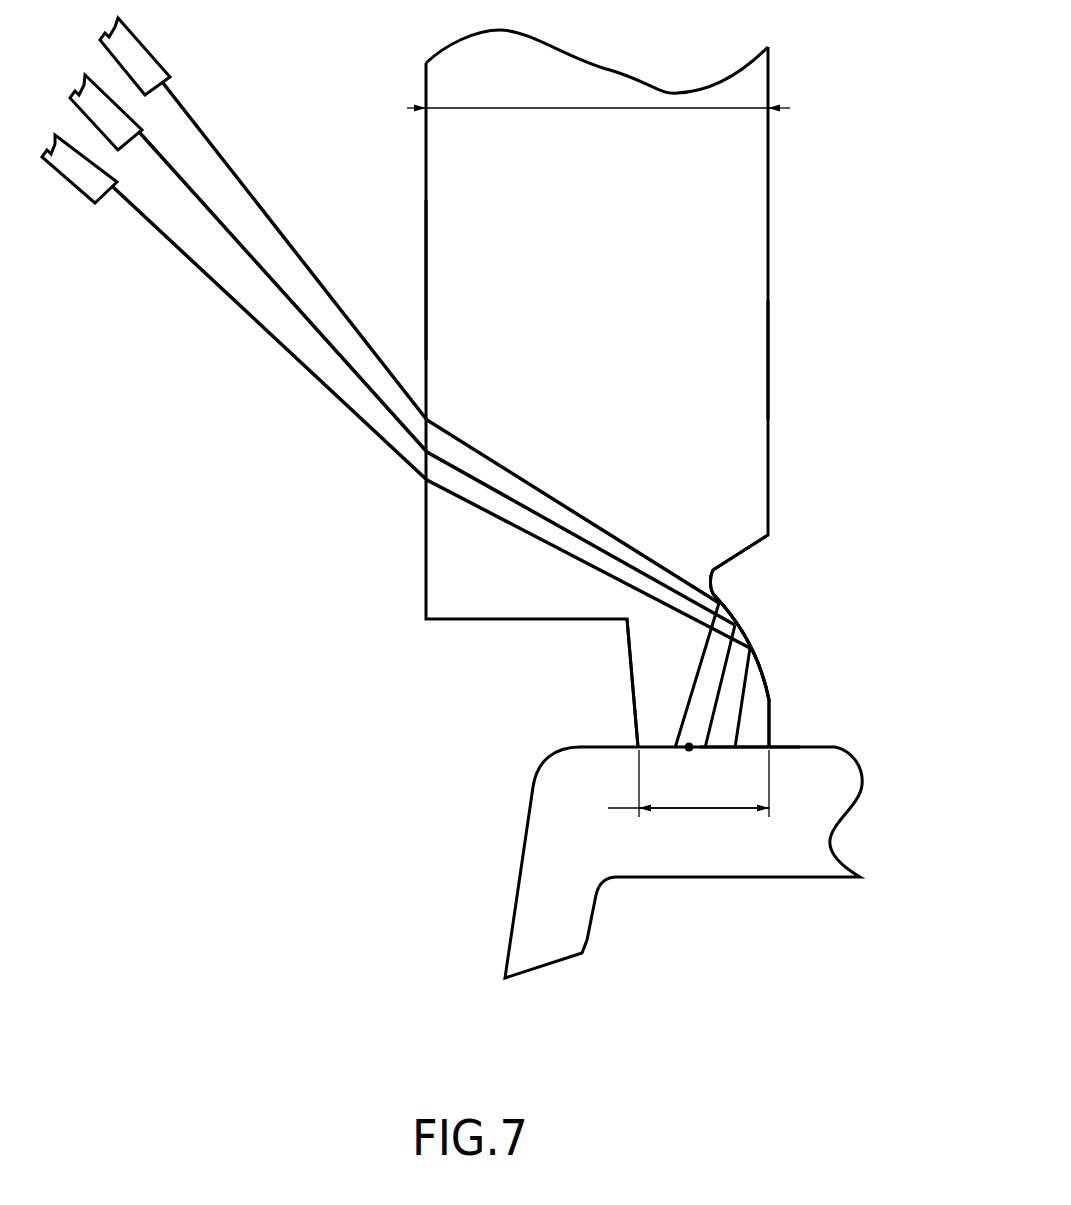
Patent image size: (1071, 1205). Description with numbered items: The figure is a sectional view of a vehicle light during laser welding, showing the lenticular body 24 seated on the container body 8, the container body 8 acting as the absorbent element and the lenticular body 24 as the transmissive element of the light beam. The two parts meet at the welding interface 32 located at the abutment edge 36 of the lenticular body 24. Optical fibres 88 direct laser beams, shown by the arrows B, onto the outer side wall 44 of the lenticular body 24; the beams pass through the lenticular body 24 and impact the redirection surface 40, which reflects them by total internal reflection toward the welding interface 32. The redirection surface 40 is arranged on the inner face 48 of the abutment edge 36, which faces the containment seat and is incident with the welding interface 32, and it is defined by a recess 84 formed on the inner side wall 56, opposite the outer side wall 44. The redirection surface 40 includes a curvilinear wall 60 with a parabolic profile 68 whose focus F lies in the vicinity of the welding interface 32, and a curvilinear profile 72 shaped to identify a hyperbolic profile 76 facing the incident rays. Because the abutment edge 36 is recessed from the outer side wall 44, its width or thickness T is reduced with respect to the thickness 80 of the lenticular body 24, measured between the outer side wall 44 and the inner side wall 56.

The container body 8 is at (660, 857).
The lenticular body 24 is at (687, 247).
The welding interface 32 is at (739, 758).
The abutment edge 36 is at (653, 677).
The redirection surface 40 is at (746, 608).
The outer side wall 44 is at (425, 277).
The inner face 48 is at (789, 693).
The inner side wall 56 is at (771, 360).
The curvilinear wall 60 is at (768, 660).
The parabolic profile 68 is at (741, 647).
The curvilinear profile 72 is at (741, 647).
The hyperbolic profile 76 is at (736, 646).
The thickness of the lenticular body 80 is at (615, 102).
The recess 84 is at (738, 592).
The optical fibres 88 is at (153, 75).
The arrows B is at (452, 495).
The focus F is at (689, 762).
The width or thickness T is at (688, 783).